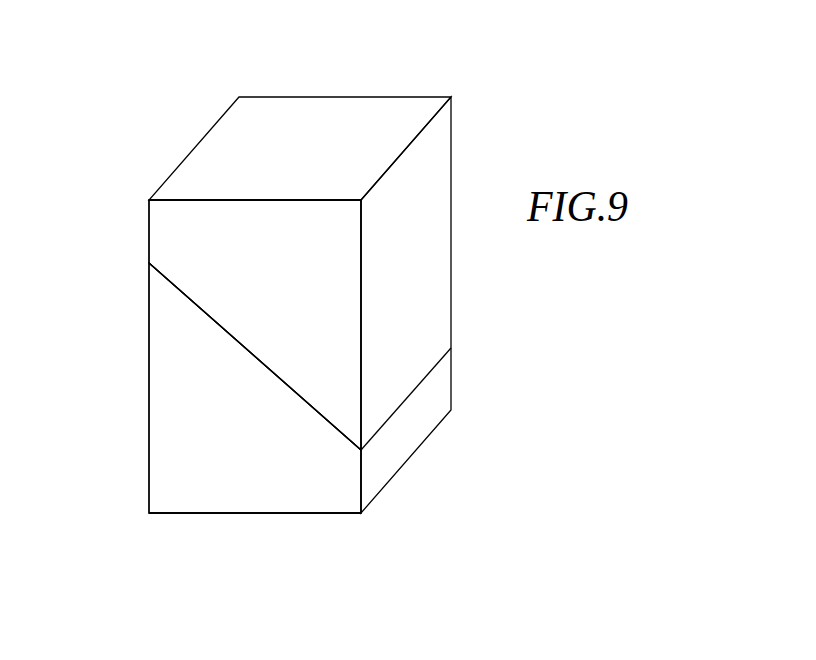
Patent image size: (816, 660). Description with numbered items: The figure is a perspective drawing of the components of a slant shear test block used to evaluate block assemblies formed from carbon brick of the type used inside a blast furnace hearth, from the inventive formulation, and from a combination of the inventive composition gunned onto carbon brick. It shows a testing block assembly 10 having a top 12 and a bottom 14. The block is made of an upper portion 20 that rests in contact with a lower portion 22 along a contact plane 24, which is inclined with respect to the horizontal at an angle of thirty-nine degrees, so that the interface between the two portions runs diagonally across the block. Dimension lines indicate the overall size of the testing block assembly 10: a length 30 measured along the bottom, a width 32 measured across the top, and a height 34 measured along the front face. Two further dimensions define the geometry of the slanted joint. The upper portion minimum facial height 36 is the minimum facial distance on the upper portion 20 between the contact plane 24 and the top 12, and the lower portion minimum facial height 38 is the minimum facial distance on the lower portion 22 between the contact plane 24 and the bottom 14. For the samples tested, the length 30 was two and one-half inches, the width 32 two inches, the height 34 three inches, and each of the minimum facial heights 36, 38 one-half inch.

The testing block assembly 10 is at (447, 64).
The top 12 is at (313, 152).
The bottom 14 is at (287, 515).
The upper portion 20 is at (277, 285).
The lower portion 22 is at (243, 450).
The contact plane 24 is at (268, 365).
The length 30 is at (361, 518).
The width 32 is at (149, 195).
The height 34 is at (142, 200).
The upper portion minimum facial height 36 is at (97, 200).
The lower portion minimum facial height 38 is at (458, 348).